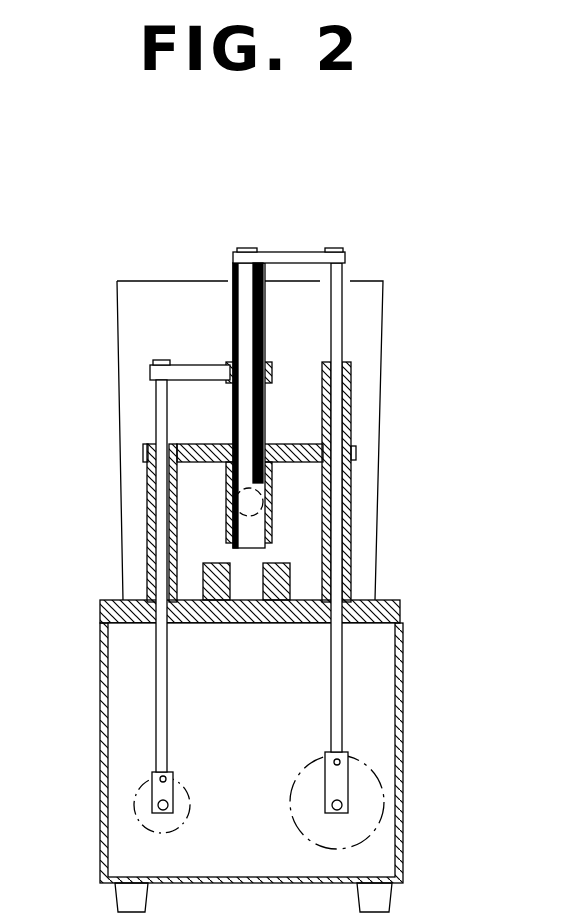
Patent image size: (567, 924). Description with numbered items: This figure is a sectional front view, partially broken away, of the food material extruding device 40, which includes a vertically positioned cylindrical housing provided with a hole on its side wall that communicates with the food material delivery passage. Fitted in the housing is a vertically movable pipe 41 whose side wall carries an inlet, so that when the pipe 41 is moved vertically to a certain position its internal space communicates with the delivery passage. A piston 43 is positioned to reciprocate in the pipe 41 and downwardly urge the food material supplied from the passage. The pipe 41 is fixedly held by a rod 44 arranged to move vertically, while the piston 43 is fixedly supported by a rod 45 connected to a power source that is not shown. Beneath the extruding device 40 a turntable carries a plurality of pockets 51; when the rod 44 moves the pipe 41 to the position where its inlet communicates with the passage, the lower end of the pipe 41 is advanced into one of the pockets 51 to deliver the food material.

The food material extruding device 40 is at (204, 506).
The vertically movable pipe 41 is at (263, 403).
The piston 43 is at (245, 310).
The rod 44 is at (160, 413).
The rod 45 is at (343, 325).
The pocket 51 is at (247, 600).